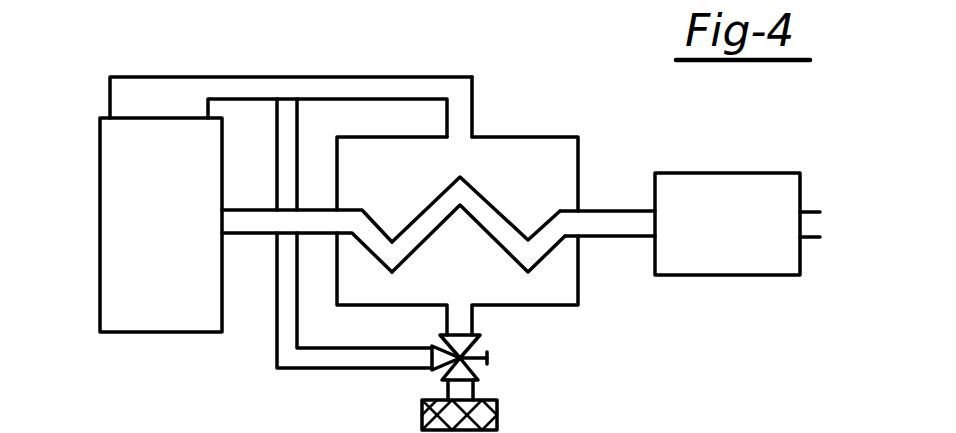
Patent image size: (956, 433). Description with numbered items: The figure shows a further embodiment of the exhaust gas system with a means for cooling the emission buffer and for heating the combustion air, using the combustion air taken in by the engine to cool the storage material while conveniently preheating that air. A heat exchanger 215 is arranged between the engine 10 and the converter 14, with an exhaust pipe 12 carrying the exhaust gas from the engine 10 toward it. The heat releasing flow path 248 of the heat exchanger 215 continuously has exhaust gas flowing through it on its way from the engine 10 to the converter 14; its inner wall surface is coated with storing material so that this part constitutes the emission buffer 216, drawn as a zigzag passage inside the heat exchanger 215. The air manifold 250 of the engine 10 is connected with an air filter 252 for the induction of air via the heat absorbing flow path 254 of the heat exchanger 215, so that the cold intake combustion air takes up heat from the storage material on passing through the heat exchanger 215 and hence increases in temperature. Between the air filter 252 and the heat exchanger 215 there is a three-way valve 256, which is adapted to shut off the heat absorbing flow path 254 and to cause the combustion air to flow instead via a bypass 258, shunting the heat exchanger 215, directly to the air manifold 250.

The engine 10 is at (150, 310).
The exhaust pipe 12 is at (246, 220).
The converter 14 is at (707, 190).
The heat exchanger 215 is at (583, 134).
The emission buffer 216 is at (524, 254).
The heat releasing flow path 248 is at (602, 222).
The air manifold 250 is at (148, 93).
The air filter 252 is at (497, 421).
The heat absorbing flow path 254 is at (465, 118).
The three-way valve 256 is at (468, 352).
The bypass 258 is at (286, 332).